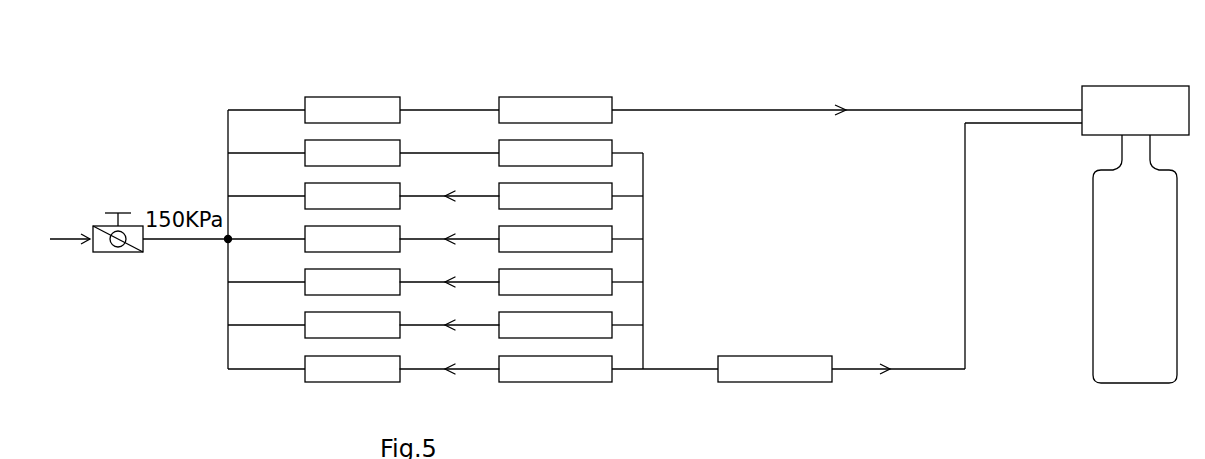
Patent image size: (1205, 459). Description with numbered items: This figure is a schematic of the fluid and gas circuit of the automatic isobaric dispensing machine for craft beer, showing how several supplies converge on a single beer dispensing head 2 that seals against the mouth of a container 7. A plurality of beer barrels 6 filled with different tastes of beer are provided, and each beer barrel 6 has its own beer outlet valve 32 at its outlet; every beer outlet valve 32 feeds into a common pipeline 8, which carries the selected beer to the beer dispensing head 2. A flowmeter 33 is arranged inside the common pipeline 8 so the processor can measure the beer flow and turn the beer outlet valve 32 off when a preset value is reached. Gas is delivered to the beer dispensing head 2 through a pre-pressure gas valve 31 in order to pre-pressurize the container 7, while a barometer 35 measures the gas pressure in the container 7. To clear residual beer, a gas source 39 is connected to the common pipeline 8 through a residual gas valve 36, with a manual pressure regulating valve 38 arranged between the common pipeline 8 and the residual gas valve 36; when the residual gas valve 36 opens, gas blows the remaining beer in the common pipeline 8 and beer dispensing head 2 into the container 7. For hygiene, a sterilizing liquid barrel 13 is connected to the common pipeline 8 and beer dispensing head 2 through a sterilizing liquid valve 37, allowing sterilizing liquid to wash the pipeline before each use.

The beer dispensing head 2 is at (1141, 100).
The container 7 is at (1103, 293).
The common pipeline 8 is at (888, 372).
The gas source 39 is at (137, 228).
The pre-pressure gas valve 31 is at (352, 110).
The barometer 35 is at (555, 110).
The manual pressure regulating valve 38 is at (352, 153).
The residual gas valve 36 is at (555, 153).
The sterilizing liquid barrel 13 is at (352, 196).
The sterilizing liquid valve 37 is at (555, 196).
The beer barrel 6 is at (352, 304).
The beer outlet valve 32 is at (555, 304).
The flowmeter 33 is at (775, 369).